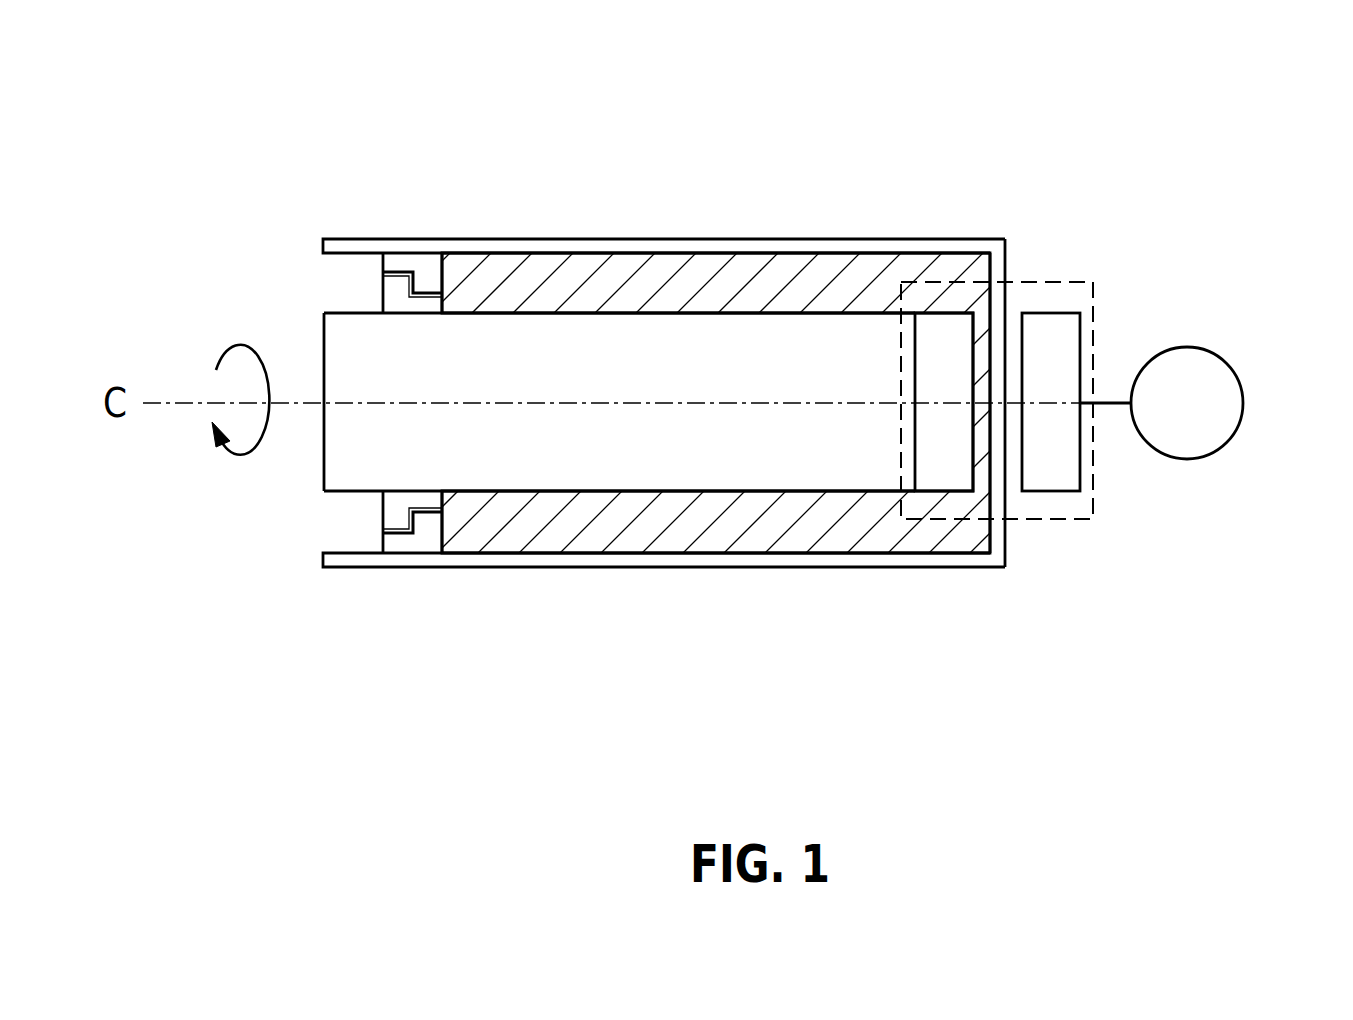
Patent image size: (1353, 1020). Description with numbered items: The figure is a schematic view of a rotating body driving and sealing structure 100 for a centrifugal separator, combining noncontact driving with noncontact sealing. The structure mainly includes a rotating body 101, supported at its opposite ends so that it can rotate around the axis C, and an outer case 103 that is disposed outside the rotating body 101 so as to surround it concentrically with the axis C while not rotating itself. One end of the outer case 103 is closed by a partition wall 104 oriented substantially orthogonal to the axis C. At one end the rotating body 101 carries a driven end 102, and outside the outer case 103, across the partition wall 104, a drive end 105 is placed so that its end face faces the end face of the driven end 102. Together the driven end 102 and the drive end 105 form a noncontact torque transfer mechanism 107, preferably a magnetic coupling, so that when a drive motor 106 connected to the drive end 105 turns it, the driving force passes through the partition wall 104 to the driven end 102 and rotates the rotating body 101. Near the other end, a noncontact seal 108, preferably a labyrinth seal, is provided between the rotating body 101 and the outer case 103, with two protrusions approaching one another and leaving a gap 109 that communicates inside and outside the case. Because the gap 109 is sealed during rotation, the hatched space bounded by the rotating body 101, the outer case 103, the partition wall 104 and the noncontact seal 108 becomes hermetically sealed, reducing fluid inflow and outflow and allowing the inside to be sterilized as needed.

The rotating body driving and sealing structure 100 is at (429, 154).
The rotating body 101 is at (648, 312).
The driven end 102 is at (940, 313).
The outer case 103 is at (710, 567).
The partition wall 104 is at (1000, 544).
The drive end 105 is at (1050, 313).
The drive motor 106 is at (1200, 348).
The noncontact torque transfer mechanism 107 is at (1093, 497).
The noncontact seal 108 is at (383, 282).
The gap 109 is at (383, 533).